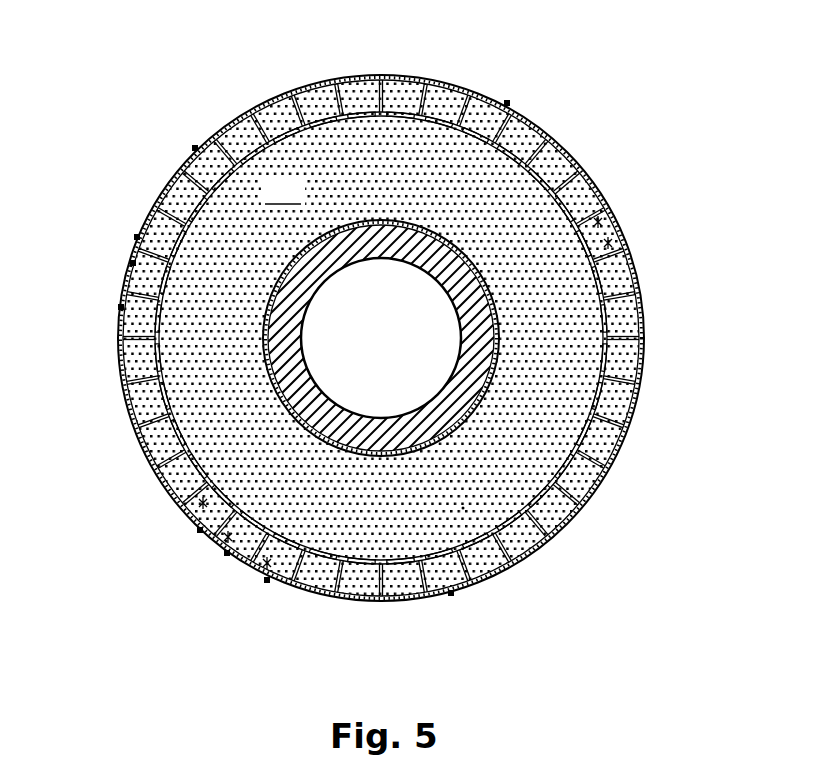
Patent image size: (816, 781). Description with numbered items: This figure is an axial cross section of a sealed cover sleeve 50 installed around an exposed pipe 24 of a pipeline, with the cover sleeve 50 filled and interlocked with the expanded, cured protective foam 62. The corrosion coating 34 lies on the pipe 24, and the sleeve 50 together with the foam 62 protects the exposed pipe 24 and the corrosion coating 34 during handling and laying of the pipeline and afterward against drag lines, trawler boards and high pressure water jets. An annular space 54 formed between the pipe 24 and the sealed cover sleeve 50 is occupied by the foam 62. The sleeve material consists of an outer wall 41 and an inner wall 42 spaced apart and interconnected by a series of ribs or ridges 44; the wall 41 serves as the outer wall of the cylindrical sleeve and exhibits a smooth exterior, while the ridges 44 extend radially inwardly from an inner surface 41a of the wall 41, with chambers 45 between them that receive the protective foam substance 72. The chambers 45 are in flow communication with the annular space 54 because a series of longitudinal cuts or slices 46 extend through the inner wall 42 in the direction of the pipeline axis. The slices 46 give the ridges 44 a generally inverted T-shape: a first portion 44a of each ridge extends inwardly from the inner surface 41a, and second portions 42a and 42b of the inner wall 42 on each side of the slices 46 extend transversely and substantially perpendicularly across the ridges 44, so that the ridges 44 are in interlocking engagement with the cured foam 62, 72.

The pipe 24 is at (450, 398).
The corrosion coating 34 is at (497, 365).
The wall 41 is at (648, 327).
The inner surface of wall 41a is at (640, 273).
The wall 42 is at (225, 133).
The second portion of inner wall 42a is at (277, 93).
The second portion of inner wall 42b is at (260, 110).
The ribs or ridges 44 is at (267, 580).
The first portion of ridge 44a is at (613, 227).
The tubes or passages 45 is at (163, 190).
The longitudinal cuts or slices 46 is at (120, 307).
The cover sleeve 50 is at (672, 308).
The annular space 54 is at (463, 508).
The foam 62 is at (570, 367).
The protective foam substance 72 is at (160, 487).